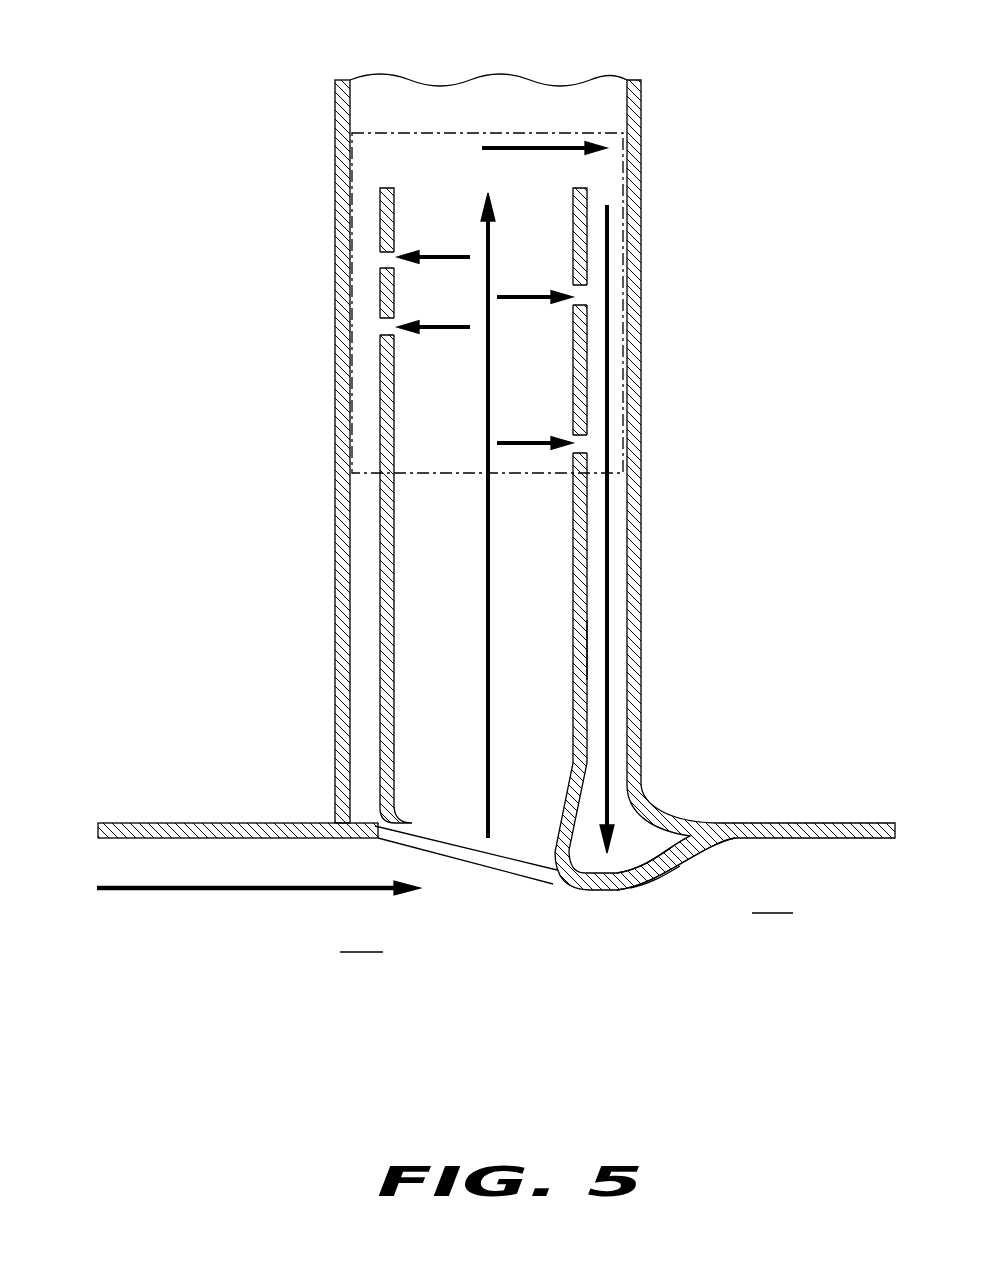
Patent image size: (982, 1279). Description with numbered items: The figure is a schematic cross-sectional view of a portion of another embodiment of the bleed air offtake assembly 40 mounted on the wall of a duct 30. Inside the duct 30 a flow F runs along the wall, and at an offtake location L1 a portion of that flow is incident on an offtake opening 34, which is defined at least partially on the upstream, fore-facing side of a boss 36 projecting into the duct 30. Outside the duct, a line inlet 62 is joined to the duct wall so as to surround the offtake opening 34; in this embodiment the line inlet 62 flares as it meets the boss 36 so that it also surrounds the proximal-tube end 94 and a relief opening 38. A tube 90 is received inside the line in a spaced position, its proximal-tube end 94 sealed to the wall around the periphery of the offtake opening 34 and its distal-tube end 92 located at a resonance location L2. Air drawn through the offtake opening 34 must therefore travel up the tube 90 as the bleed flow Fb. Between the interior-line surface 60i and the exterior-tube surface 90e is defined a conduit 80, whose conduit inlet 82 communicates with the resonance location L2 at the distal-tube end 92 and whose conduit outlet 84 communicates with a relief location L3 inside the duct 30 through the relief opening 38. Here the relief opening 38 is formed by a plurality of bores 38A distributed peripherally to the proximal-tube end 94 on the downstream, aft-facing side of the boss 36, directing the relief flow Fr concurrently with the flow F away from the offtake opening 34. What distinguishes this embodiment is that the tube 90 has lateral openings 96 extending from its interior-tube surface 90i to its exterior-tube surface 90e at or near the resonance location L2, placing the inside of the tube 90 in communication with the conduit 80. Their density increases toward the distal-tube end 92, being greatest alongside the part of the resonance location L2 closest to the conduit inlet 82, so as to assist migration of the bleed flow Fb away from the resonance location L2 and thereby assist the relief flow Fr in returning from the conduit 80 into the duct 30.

The duct 30 is at (155, 1027).
The offtake opening 34 is at (510, 873).
The boss 36 is at (590, 888).
The relief opening 38 is at (693, 900).
The bores 38A is at (640, 878).
The bleed air offtake assembly 40 is at (120, 122).
The interior-line surface 60i is at (725, 541).
The line inlet 62 is at (332, 823).
The conduit 80 is at (725, 541).
The conduit inlet 82 is at (608, 197).
The conduit outlet 84 is at (620, 798).
The tube 90 is at (279, 451).
The distal-tube end 92 is at (384, 188).
The interior-tube surface 90i is at (586, 366).
The exterior-tube surface 90e is at (590, 650).
The proximal-tube end 94 is at (395, 823).
The lateral openings 96 is at (578, 298).
The flow F is at (162, 890).
The bleed flow Fb is at (487, 598).
The relief flow Fr is at (607, 505).
The offtake location L1 is at (361, 929).
The resonance location L2 is at (405, 133).
The relief location L3 is at (772, 891).